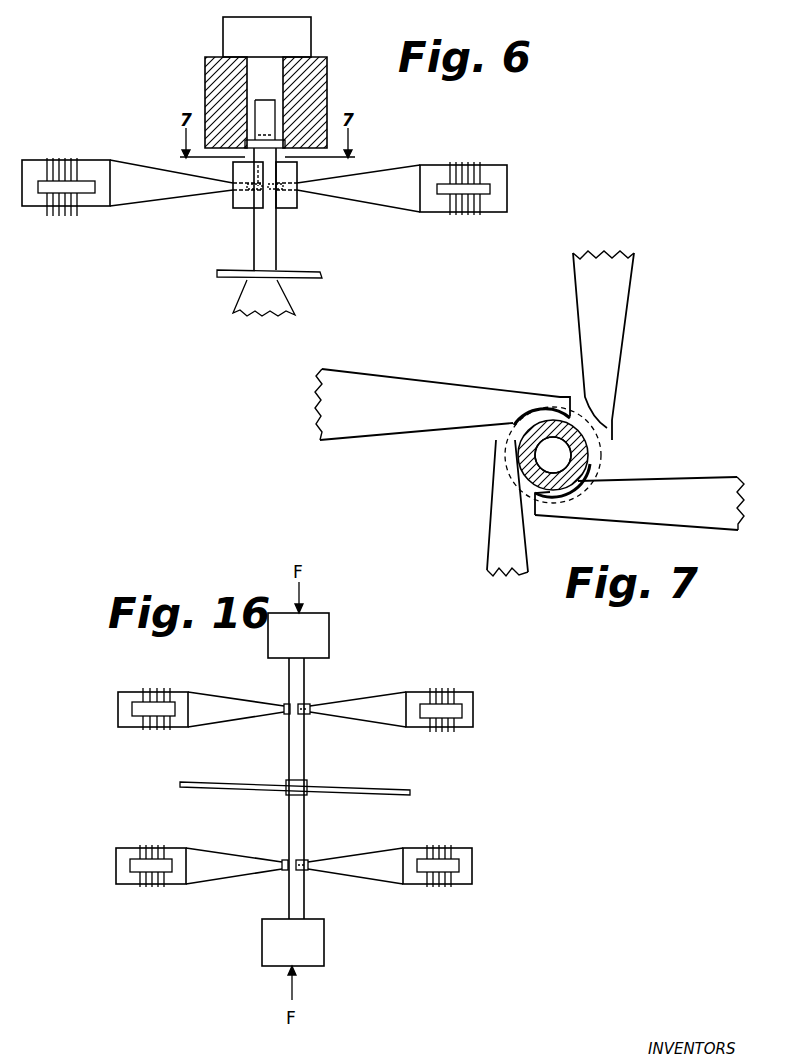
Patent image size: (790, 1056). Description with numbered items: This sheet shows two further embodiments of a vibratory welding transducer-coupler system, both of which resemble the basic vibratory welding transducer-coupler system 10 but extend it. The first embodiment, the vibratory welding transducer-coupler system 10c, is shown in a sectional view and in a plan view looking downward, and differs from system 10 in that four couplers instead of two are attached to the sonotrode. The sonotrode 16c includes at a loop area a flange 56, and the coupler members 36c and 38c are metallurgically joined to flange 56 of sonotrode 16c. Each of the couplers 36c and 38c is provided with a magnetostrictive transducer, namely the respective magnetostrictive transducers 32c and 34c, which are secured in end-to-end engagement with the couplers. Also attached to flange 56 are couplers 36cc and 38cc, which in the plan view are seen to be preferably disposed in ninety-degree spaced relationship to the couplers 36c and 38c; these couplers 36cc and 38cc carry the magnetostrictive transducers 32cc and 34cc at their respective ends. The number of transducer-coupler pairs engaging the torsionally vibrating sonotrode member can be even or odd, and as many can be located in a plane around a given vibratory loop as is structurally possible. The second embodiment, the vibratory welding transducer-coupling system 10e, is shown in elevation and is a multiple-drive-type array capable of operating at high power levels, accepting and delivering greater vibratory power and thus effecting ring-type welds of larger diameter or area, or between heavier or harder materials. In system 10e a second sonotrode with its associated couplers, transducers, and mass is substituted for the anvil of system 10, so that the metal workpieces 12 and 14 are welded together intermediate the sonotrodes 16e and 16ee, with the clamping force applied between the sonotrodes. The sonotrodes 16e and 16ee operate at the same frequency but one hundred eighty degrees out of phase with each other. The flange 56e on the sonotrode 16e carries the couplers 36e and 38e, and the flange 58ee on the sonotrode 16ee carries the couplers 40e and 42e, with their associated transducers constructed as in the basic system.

In FIG. 7, the vibratory welding transducer-coupler system 10 is at (466, 459).
In FIG. 6, the vibratory welding transducer-coupler system 10c is at (205, 273).
In FIG. 16, the vibratory welding transducer-coupling system 10e is at (160, 786).
In FIG. 16, the metal workpiece 12 is at (229, 786).
In FIG. 16, the metal workpiece 14 is at (391, 796).
In FIG. 6, the sonotrode 16c is at (265, 238).
In FIG. 7, the sonotrode 16c is at (568, 479).
In FIG. 16, the sonotrode 16e is at (301, 740).
In FIG. 16, the sonotrode 16ee is at (294, 832).
In FIG. 6, the magnetostrictive transducer 32c is at (100, 160).
In FIG. 6, the magnetostrictive transducer 32cc is at (236, 202).
In FIG. 6, the magnetostrictive transducer 34c is at (510, 184).
In FIG. 6, the magnetostrictive transducer 34cc is at (290, 204).
In FIG. 6, the coupler member 36c is at (167, 196).
In FIG. 7, the coupler member 36c is at (458, 396).
In FIG. 7, the coupler 36cc is at (500, 533).
In FIG. 16, the coupler 36e is at (372, 707).
In FIG. 6, the coupler member 38c is at (377, 198).
In FIG. 7, the coupler member 38c is at (705, 488).
In FIG. 7, the coupler 38cc is at (610, 348).
In FIG. 16, the coupler 38e is at (210, 705).
In FIG. 16, the coupler 40e is at (362, 873).
In FIG. 16, the coupler 42e is at (222, 870).
In FIG. 6, the flange 56 is at (256, 168).
In FIG. 7, the flange 56 is at (598, 452).
In FIG. 16, the flange 56e is at (285, 705).
In FIG. 16, the flange 58ee is at (283, 863).